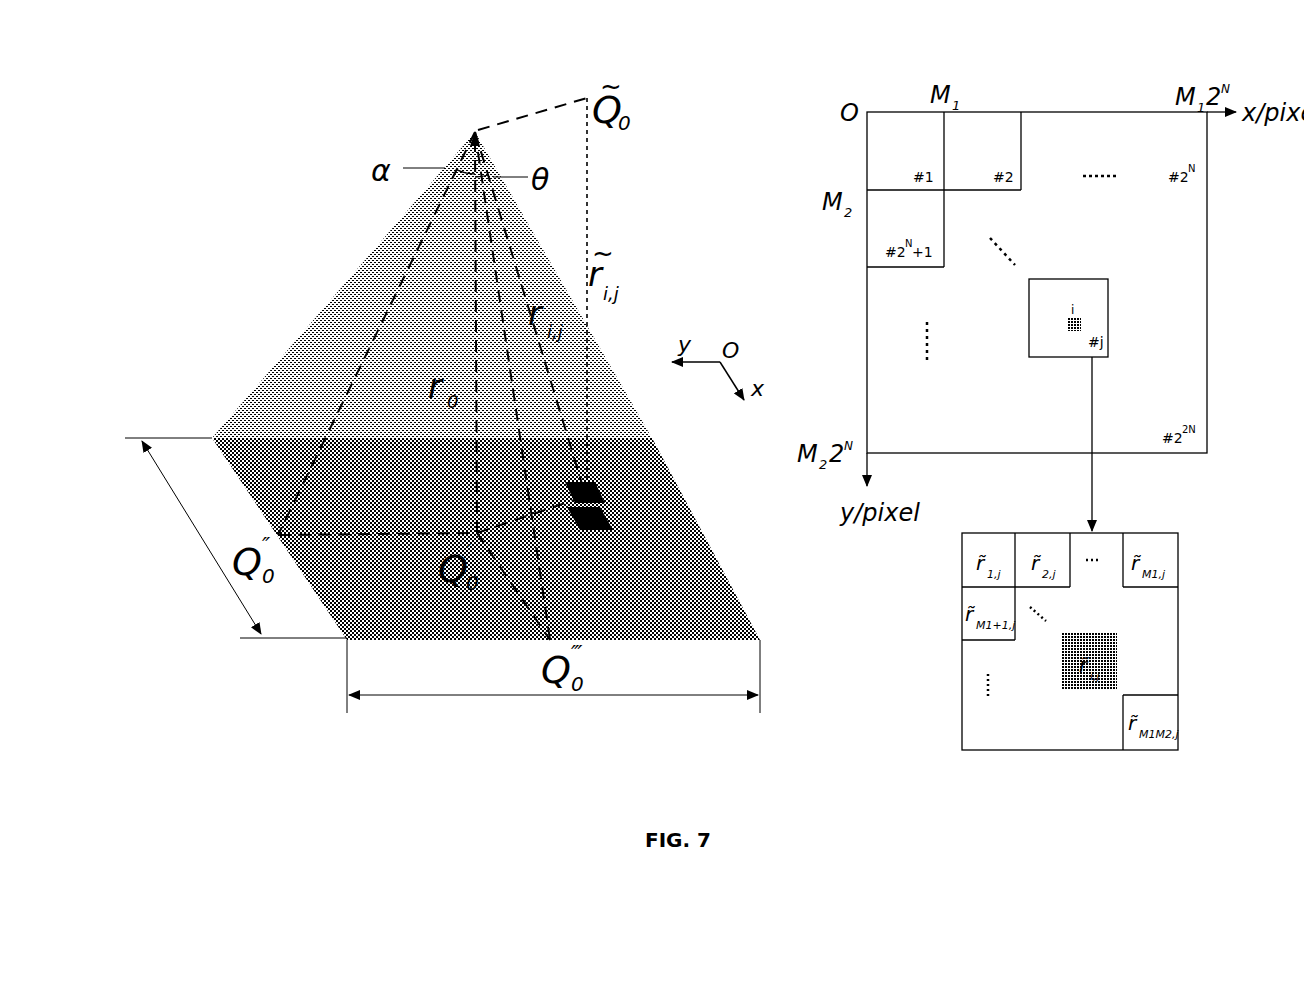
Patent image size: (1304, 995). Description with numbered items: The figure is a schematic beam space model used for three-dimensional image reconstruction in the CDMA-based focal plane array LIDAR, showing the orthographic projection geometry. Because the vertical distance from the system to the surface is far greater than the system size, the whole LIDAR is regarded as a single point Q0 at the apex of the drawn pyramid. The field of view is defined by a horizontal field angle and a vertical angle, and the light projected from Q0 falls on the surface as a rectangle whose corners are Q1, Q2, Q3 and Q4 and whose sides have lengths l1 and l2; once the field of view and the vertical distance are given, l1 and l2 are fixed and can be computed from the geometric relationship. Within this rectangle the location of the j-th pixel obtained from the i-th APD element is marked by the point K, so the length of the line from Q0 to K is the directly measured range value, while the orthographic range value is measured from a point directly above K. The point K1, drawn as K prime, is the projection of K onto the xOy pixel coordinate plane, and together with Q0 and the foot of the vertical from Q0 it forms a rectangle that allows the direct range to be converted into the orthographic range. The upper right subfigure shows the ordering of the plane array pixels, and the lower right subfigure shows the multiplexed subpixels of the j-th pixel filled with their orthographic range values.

The system location point Q0 is at (471, 110).
The rectangle corner point Q1 is at (645, 431).
The rectangle corner point Q2 is at (786, 672).
The rectangle corner point Q3 is at (325, 672).
The rectangle corner point Q4 is at (192, 421).
The pixel location point K is at (602, 519).
The projection point K' K1 is at (603, 489).
The rectangle length l1 is at (186, 557).
The rectangle width l2 is at (596, 732).